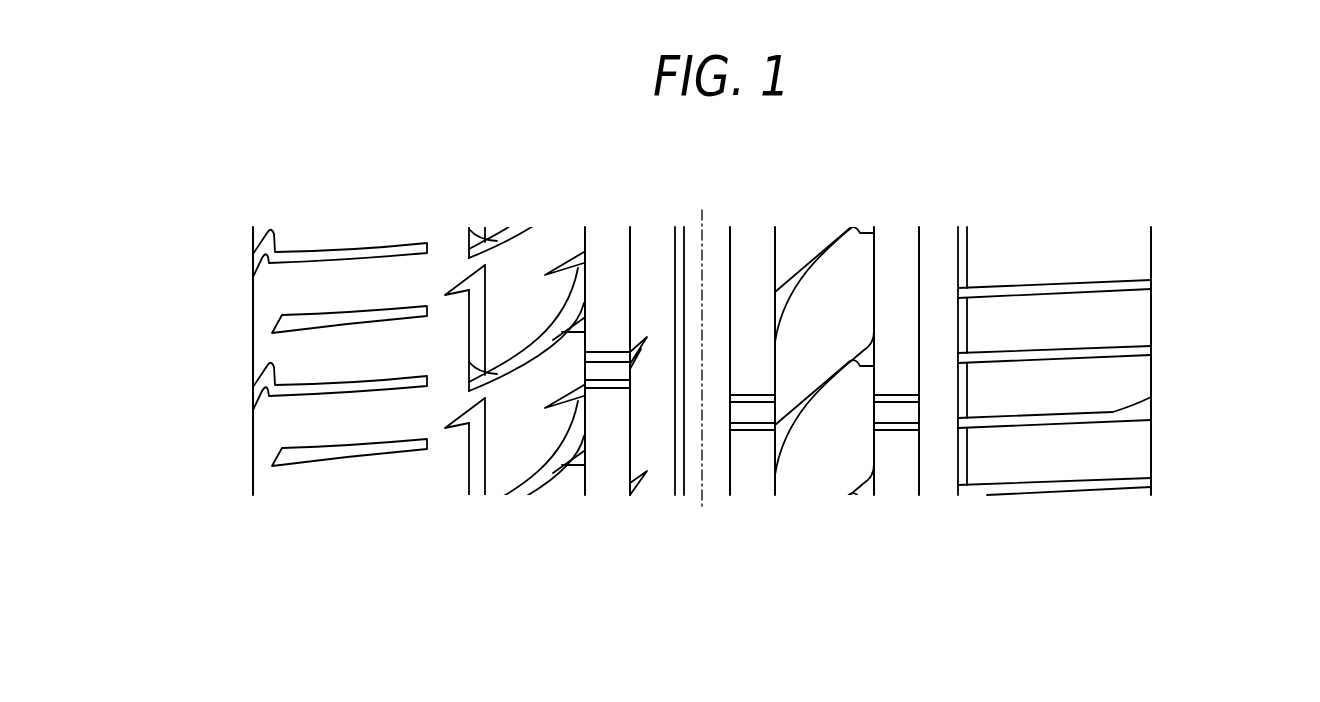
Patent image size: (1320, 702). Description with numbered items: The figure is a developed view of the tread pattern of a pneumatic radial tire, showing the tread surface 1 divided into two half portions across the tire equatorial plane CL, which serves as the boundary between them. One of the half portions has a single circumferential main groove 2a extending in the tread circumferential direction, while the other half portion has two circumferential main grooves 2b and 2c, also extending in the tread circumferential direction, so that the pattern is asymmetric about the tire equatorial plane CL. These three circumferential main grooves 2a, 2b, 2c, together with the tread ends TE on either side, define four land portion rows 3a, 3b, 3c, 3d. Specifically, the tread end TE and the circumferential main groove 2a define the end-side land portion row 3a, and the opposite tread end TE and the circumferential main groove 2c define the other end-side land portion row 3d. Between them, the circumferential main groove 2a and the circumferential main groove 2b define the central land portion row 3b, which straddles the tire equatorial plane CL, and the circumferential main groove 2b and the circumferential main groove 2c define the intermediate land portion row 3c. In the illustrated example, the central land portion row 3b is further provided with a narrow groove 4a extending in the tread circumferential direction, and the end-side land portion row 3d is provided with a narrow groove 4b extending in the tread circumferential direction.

The tread surface 1 is at (1043, 192).
The circumferential main groove 2a is at (607, 243).
The circumferential main groove 2b is at (748, 245).
The circumferential main groove 2c is at (893, 245).
The end-side land portion row 3a is at (585, 507).
The central land portion row 3b is at (730, 507).
The intermediate land portion row 3c is at (874, 507).
The end-side land portion row 3d is at (1151, 507).
The narrow groove 4a is at (672, 243).
The narrow groove 4b is at (963, 243).
The tire equatorial plane CL is at (701, 343).
The tread end TE is at (251, 318).